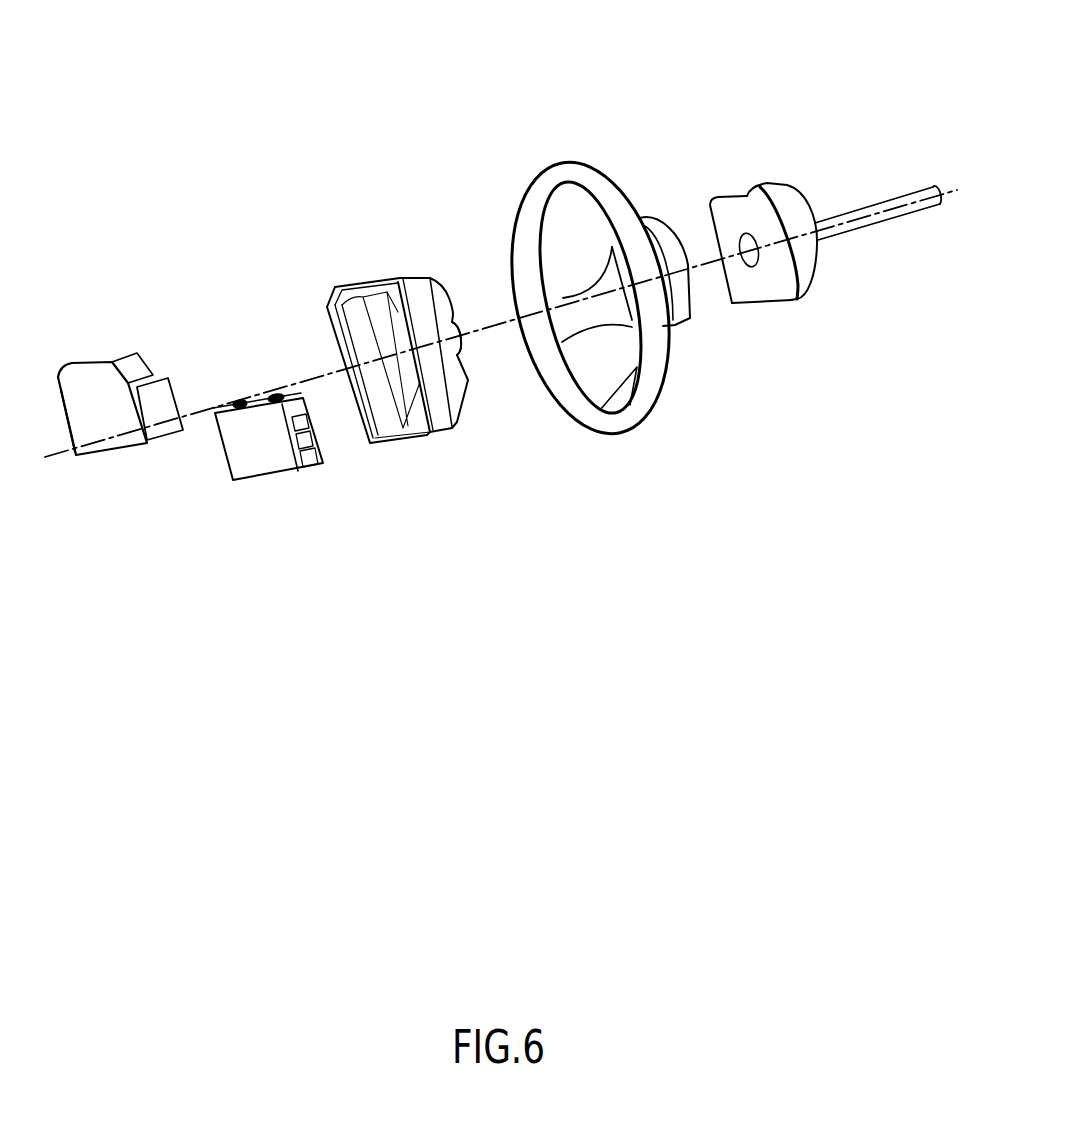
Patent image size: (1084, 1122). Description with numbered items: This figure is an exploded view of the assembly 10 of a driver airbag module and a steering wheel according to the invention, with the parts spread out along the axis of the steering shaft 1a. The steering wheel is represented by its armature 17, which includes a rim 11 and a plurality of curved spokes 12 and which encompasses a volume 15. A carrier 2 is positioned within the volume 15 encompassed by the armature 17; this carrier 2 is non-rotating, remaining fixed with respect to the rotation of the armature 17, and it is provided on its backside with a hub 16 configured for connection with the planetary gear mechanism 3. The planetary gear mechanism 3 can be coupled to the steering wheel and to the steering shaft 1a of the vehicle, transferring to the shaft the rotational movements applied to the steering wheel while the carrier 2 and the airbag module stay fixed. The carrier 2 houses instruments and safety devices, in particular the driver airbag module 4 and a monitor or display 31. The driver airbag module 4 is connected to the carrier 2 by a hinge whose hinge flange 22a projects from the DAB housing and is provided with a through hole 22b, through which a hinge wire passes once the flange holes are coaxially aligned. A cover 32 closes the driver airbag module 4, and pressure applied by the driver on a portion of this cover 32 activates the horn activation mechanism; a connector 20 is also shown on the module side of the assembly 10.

The assembly 10 is at (318, 62).
The carrier 2 is at (385, 352).
The planetary gear mechanism 3 is at (812, 160).
The driver airbag module 4 is at (295, 442).
The rim 11 is at (530, 253).
The curved spokes 12 is at (592, 310).
The volume 15 is at (580, 225).
The hub 16 is at (466, 343).
The armature 17 is at (535, 148).
The connector 20 is at (294, 468).
The hinge flange 22a is at (262, 396).
The through hole 22b is at (287, 396).
The monitor or display 31 is at (93, 405).
The cover 32 is at (252, 449).
The steering shaft 1a is at (893, 222).